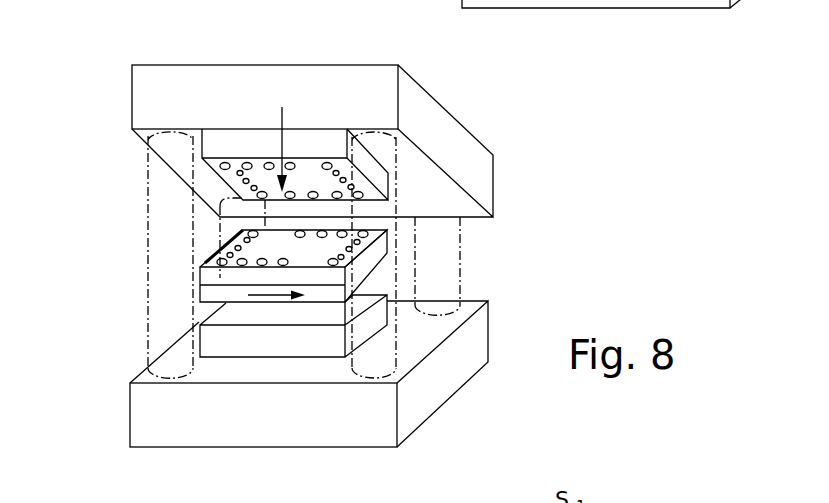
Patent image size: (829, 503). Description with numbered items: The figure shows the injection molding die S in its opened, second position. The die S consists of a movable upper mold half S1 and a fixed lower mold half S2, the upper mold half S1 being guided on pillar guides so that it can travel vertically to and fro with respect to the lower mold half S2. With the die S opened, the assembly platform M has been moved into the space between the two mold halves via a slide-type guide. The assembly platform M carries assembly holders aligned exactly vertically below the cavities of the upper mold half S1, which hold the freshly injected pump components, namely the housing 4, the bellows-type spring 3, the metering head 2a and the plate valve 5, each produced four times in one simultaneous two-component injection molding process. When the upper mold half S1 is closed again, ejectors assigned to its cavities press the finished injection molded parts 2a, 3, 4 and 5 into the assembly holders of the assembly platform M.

The upper mold half S1 is at (220, 137).
The lower mold half S2 is at (218, 346).
The injection molding die S is at (96, 235).
The assembly platform M is at (198, 274).
The bellows-type spring 3 is at (230, 226).
The metering head 2a is at (354, 217).
The plate valve 5 is at (203, 247).
The housing 4 is at (372, 249).